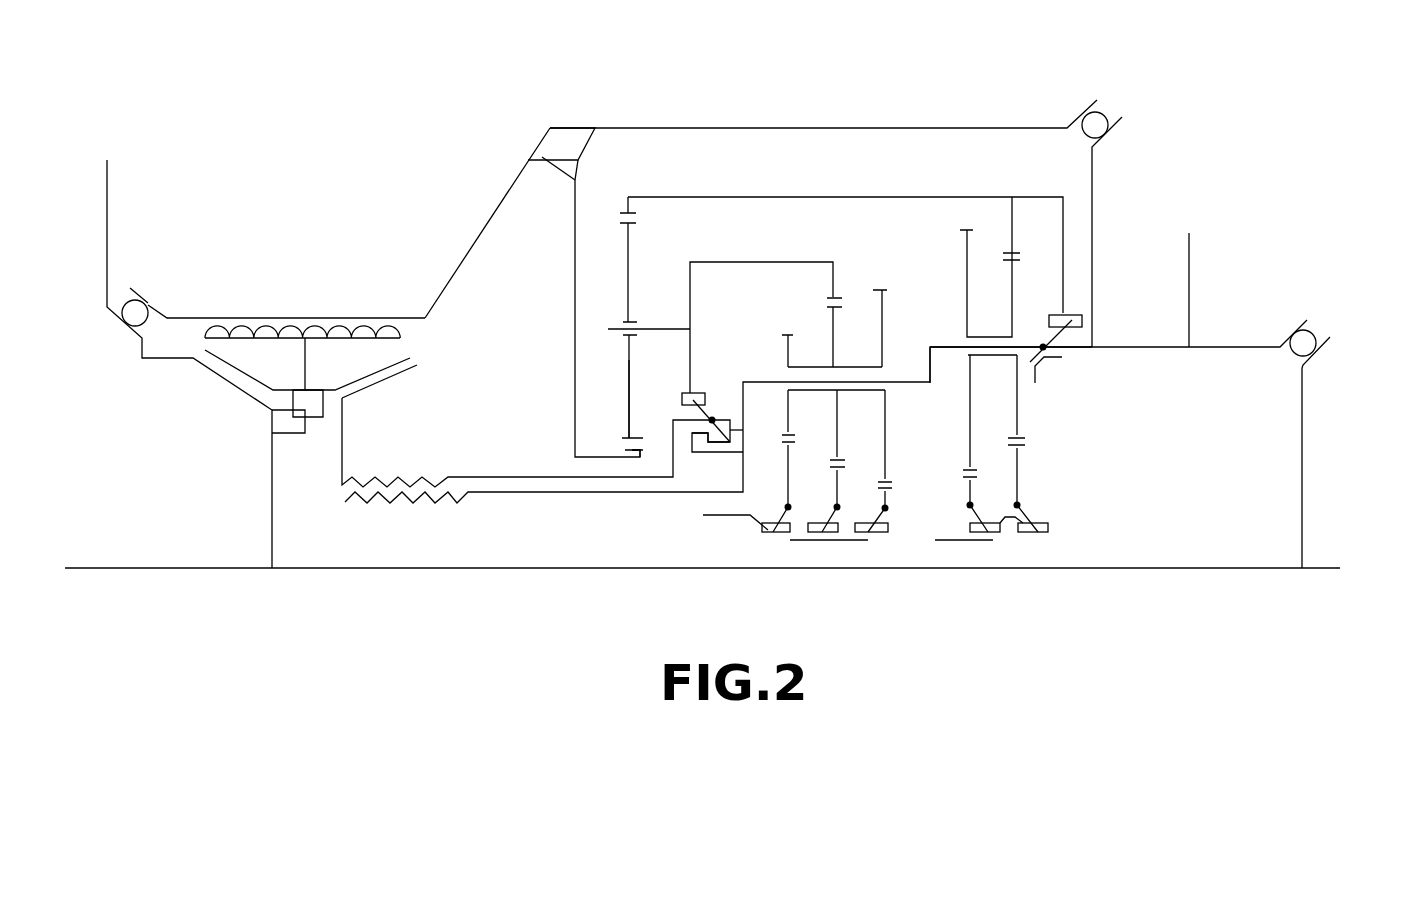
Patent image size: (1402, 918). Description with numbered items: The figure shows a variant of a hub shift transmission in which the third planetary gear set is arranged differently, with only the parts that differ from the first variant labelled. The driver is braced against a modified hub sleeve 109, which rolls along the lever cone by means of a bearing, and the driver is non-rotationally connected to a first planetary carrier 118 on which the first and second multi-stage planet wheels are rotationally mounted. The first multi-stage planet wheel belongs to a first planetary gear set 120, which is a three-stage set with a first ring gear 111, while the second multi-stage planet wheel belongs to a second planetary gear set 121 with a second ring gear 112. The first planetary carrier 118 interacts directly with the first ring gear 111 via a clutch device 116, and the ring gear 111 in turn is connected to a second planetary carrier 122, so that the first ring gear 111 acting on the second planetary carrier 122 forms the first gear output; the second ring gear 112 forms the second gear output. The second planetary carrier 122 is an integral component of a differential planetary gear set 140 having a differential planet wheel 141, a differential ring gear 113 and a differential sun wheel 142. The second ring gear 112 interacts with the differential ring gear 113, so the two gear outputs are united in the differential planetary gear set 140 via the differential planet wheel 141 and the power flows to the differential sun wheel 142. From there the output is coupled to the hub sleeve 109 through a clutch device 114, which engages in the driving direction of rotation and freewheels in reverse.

The hub sleeve 109 is at (480, 230).
The first ring gear 111 is at (790, 262).
The second ring gear 112 is at (1013, 233).
The differential ring gear 113 is at (627, 202).
The clutch device 114 is at (578, 160).
The clutch device 116 is at (707, 447).
The first planetary carrier 118 is at (943, 347).
The first planetary gear set 120 is at (890, 428).
The second planetary gear set 121 is at (968, 382).
The second planetary carrier 122 is at (658, 328).
The differential planetary gear set 140 is at (620, 350).
The differential planet wheel 141 is at (628, 397).
The differential sun wheel 142 is at (640, 457).